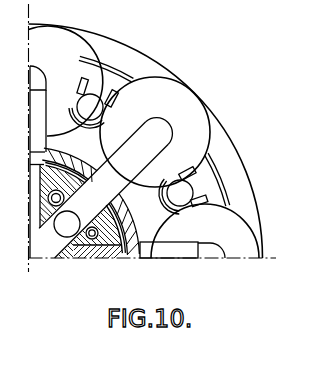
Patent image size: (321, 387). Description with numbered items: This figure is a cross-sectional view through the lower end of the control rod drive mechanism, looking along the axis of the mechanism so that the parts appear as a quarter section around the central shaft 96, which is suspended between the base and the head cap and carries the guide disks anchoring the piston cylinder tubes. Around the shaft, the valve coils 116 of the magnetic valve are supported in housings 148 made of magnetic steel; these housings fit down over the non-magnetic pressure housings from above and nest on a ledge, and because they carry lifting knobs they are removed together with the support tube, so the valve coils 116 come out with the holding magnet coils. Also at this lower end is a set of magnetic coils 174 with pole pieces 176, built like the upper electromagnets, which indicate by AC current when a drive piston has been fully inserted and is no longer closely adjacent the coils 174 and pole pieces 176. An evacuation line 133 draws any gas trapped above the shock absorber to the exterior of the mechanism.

The valve coils 116 is at (162, 58).
The housings 148 is at (103, 70).
The magnetic coils 174 is at (195, 114).
The pole pieces 176 is at (143, 168).
The evacuation line 133 is at (31, 260).
The central shaft 96 is at (48, 262).